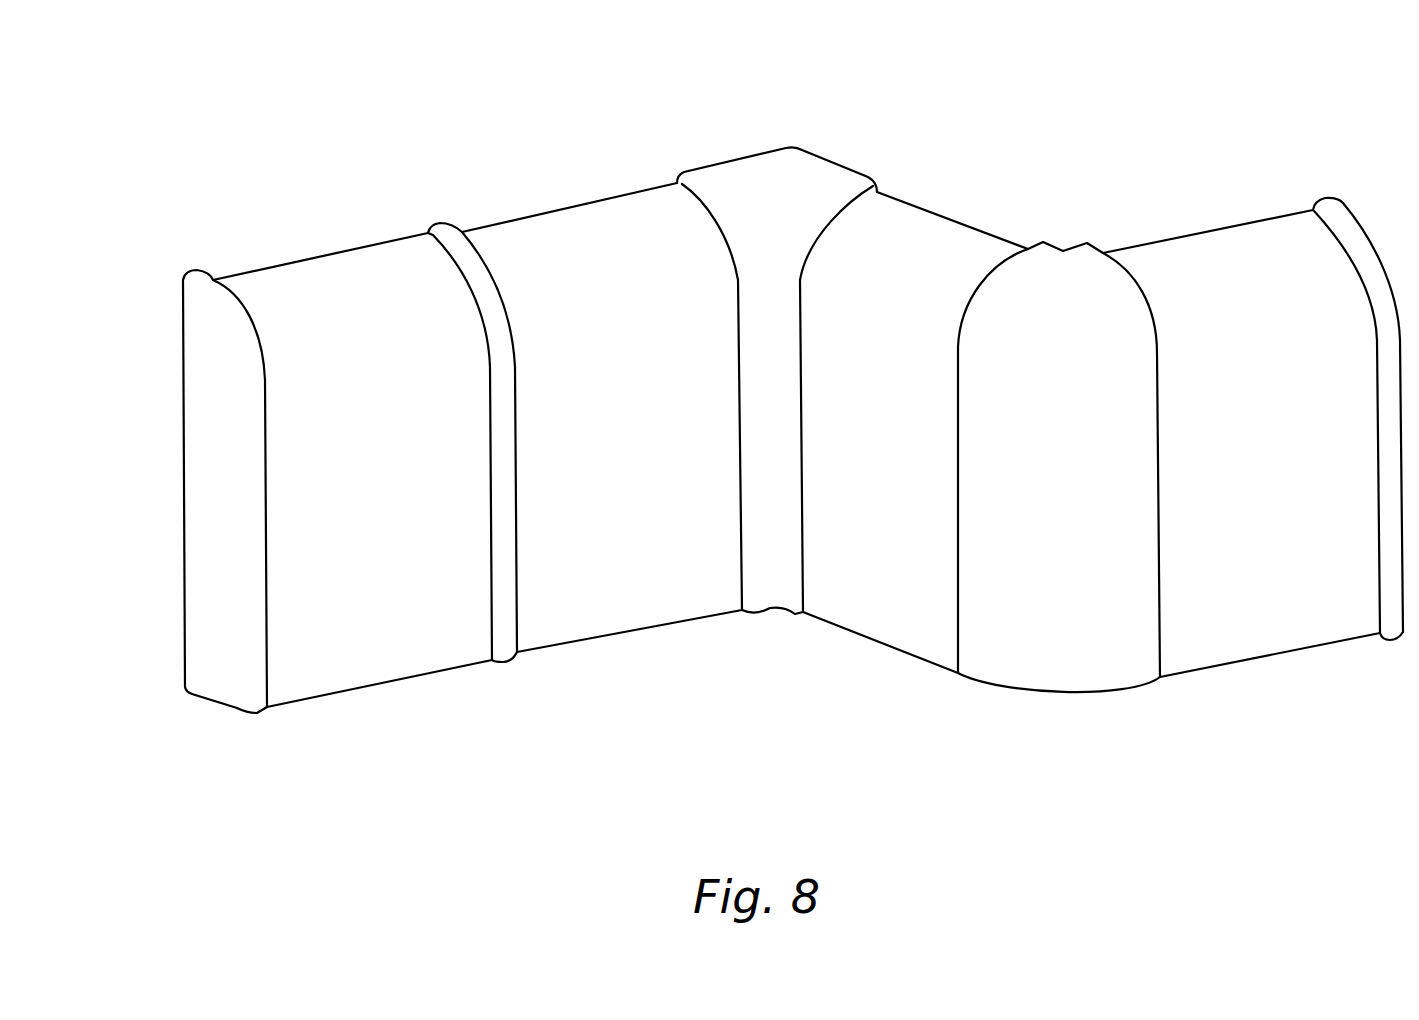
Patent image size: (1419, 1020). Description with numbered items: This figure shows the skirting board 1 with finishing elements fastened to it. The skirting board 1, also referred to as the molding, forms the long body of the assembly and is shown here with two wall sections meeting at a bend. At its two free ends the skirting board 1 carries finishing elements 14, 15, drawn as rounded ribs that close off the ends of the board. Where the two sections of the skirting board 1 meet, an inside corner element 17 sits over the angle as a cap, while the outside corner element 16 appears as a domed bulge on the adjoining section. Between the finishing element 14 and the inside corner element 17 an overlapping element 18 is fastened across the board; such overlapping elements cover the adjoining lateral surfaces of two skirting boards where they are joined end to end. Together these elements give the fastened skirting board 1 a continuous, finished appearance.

The skirting board 1 is at (1270, 622).
The finishing element 14 is at (202, 338).
The finishing element 15 is at (1340, 203).
The outside corner element 16 is at (1028, 262).
The inside corner element 17 is at (766, 168).
The overlapping element 18 is at (450, 236).